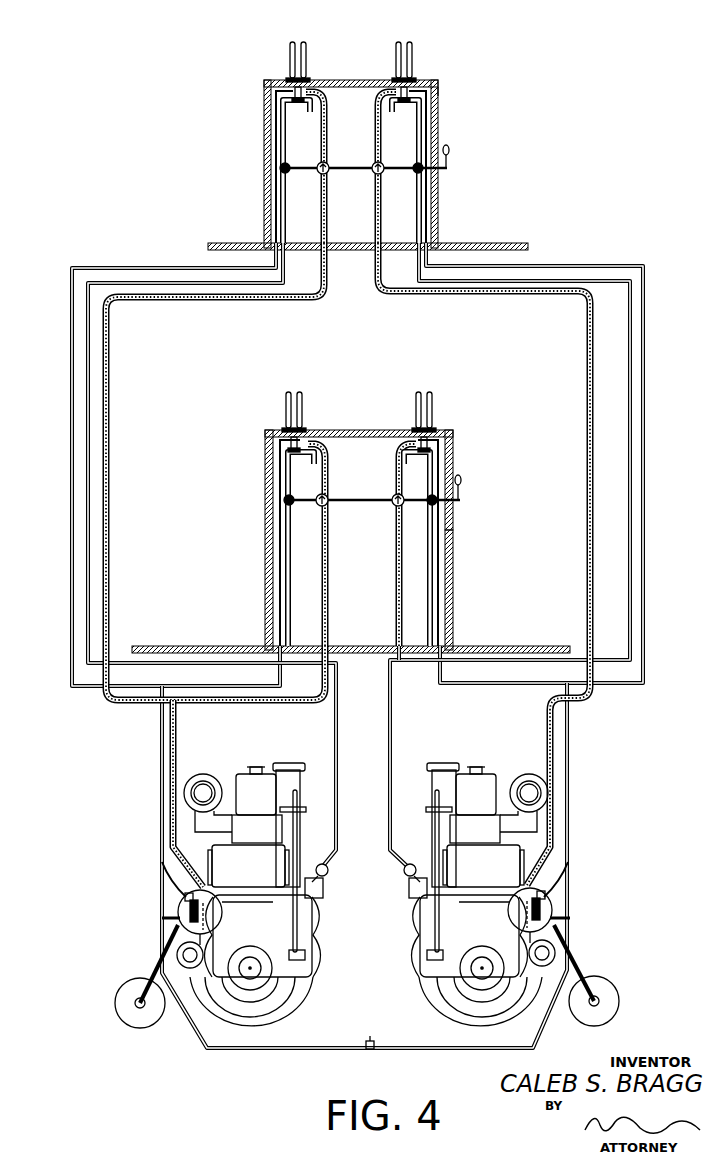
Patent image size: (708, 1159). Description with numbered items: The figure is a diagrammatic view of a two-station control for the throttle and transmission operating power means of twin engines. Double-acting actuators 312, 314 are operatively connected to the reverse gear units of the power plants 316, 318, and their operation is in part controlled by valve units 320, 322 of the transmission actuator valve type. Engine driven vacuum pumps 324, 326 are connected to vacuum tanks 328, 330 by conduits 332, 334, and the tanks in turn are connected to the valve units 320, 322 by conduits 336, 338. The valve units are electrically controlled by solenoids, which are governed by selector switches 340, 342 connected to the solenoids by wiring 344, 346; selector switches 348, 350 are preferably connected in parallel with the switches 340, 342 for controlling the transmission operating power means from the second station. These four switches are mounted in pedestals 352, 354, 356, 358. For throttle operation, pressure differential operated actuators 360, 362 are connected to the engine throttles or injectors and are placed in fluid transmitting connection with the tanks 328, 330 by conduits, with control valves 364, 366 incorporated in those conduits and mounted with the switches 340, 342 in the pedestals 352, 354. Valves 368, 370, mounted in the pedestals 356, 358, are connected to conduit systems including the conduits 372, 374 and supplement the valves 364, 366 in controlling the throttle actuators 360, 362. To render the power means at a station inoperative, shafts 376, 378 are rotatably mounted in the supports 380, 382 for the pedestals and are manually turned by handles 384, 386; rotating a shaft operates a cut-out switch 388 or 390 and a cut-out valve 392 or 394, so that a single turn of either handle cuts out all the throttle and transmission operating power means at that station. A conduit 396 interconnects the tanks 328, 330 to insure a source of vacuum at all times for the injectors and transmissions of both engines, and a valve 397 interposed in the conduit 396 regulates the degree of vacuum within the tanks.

The double-acting actuator 312 is at (178, 902).
The double-acting actuator 314 is at (552, 898).
The power plant 316 is at (284, 975).
The power plant 318 is at (422, 988).
The valve unit 320 is at (163, 866).
The valve unit 322 is at (568, 858).
The engine driven vacuum pump 324 is at (187, 970).
The engine driven vacuum pump 326 is at (548, 968).
The vacuum tank 328 is at (120, 1012).
The vacuum tank 330 is at (612, 990).
The conduit 332 is at (160, 962).
The conduit 334 is at (556, 948).
The conduit 336 is at (162, 918).
The conduit 338 is at (572, 918).
The selector switch 340 is at (302, 428).
The selector switch 342 is at (416, 410).
The wiring 344 is at (327, 578).
The wiring 346 is at (589, 430).
The selector switch 348 is at (310, 65).
The selector switch 350 is at (390, 76).
The pedestal 352 is at (297, 392).
The pedestal 354 is at (424, 392).
The pedestal 356 is at (300, 42).
The pedestal 358 is at (405, 42).
The pressure differential operated actuator 360 is at (329, 870).
The pressure differential operated actuator 362 is at (404, 880).
The control valve 364 is at (272, 430).
The control valve 366 is at (446, 430).
The valve 368 is at (290, 80).
The valve 370 is at (404, 82).
The conduit 372 is at (147, 282).
The conduit 374 is at (570, 280).
The shaft 376 is at (368, 503).
The shaft 378 is at (366, 172).
The support 380 is at (452, 548).
The support 382 is at (437, 126).
The handle 384 is at (461, 477).
The handle 386 is at (449, 153).
The cut-out switch 388 is at (396, 496).
The cut-out switch 390 is at (376, 163).
The cut-out valve 392 is at (284, 503).
The cut-out valve 394 is at (280, 172).
The conduit 396 is at (292, 1052).
The valve 397 is at (378, 1055).